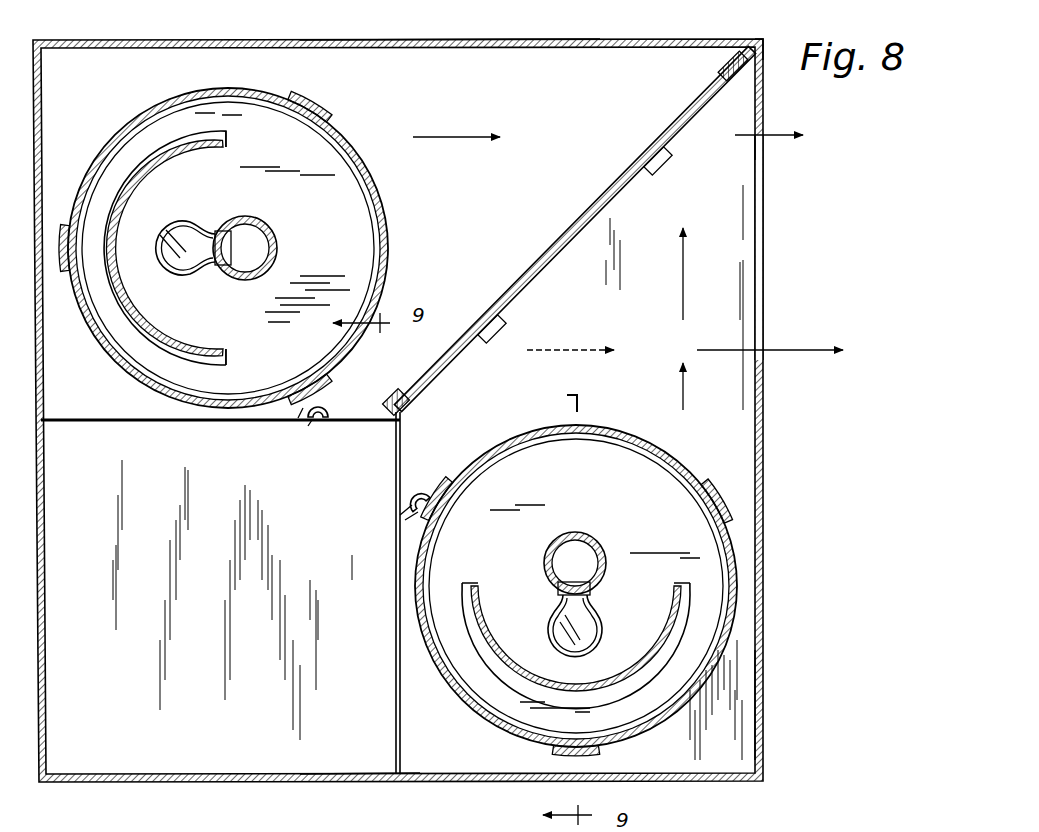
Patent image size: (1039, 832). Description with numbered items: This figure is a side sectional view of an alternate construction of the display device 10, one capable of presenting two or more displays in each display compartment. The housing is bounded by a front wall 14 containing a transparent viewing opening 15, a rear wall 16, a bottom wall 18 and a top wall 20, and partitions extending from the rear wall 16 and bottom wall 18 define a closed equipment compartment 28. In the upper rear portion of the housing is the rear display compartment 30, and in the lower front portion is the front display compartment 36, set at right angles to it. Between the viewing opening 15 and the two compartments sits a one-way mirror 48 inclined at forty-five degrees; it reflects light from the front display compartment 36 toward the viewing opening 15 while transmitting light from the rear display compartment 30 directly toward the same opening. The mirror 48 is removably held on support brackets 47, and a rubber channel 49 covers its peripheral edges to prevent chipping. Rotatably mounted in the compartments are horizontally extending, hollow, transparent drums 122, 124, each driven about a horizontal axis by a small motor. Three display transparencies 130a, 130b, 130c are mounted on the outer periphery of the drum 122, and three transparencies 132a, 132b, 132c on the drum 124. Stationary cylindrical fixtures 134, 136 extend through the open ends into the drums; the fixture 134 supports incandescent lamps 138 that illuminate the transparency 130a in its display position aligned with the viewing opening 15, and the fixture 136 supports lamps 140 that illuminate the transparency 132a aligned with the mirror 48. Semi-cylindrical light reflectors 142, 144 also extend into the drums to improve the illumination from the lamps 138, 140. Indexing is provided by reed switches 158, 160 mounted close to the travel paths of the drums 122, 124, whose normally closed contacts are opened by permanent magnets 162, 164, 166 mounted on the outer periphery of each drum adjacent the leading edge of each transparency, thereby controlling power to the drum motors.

The display device 10 is at (778, 104).
The front wall 14 is at (765, 58).
The viewing opening 15 is at (762, 140).
The rear wall 16 is at (46, 452).
The bottom wall 18 is at (362, 772).
The top wall 20 is at (437, 40).
The equipment compartment 28 is at (147, 741).
The rear display compartment 30 is at (89, 72).
The front display compartment 36 is at (742, 718).
The support brackets 47 is at (668, 164).
The one-way mirror 48 is at (627, 160).
The rubber channel 49 is at (717, 58).
The drum 122 is at (365, 213).
The drum 124 is at (625, 448).
The display transparency 130a is at (383, 183).
The display transparency 130b is at (140, 112).
The display transparency 130c is at (115, 365).
The display transparency 132a is at (623, 430).
The display transparency 132b is at (457, 690).
The display transparency 132c is at (735, 567).
The cylindrical fixture 134 is at (246, 280).
The cylindrical fixture 136 is at (585, 540).
The incandescent lamp 138 is at (175, 222).
The incandescent lamp 140 is at (577, 627).
The light reflector 142 is at (188, 357).
The light reflector 144 is at (477, 631).
The reed switch 158 is at (330, 410).
The reed switch 160 is at (408, 487).
The permanent magnet 162 is at (285, 405).
The permanent magnet 164 is at (300, 100).
The permanent magnet 166 is at (63, 272).